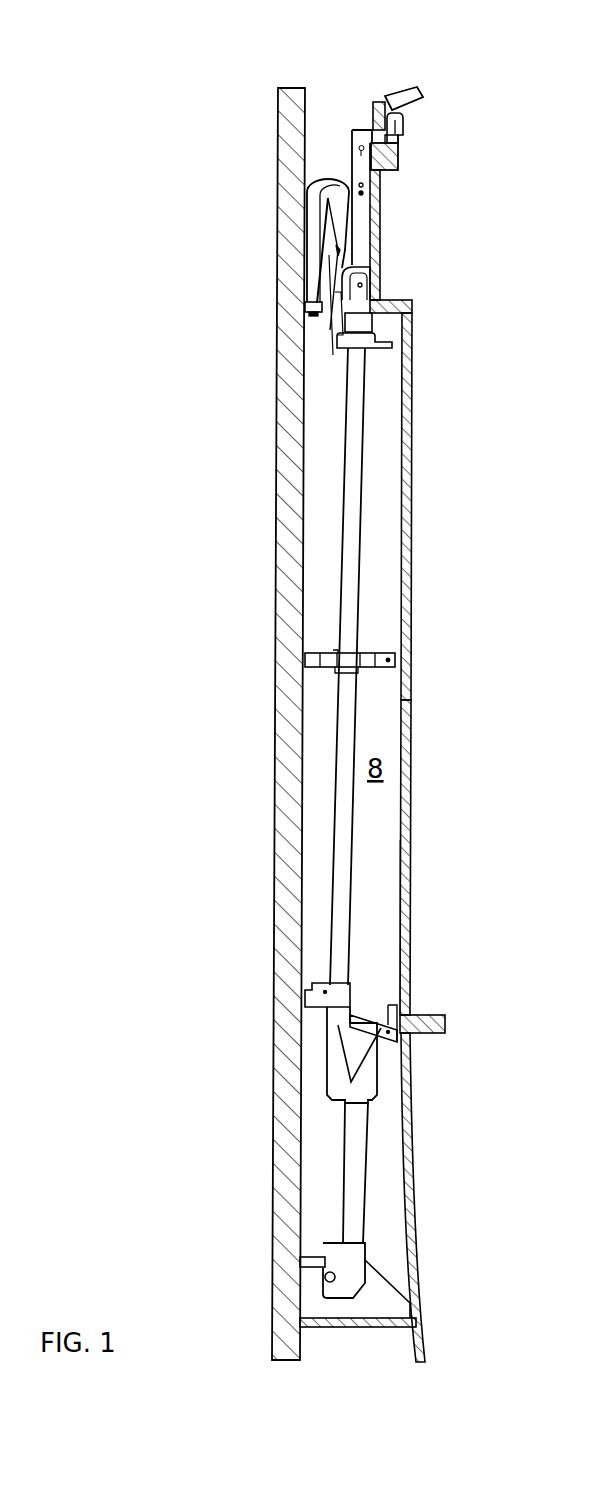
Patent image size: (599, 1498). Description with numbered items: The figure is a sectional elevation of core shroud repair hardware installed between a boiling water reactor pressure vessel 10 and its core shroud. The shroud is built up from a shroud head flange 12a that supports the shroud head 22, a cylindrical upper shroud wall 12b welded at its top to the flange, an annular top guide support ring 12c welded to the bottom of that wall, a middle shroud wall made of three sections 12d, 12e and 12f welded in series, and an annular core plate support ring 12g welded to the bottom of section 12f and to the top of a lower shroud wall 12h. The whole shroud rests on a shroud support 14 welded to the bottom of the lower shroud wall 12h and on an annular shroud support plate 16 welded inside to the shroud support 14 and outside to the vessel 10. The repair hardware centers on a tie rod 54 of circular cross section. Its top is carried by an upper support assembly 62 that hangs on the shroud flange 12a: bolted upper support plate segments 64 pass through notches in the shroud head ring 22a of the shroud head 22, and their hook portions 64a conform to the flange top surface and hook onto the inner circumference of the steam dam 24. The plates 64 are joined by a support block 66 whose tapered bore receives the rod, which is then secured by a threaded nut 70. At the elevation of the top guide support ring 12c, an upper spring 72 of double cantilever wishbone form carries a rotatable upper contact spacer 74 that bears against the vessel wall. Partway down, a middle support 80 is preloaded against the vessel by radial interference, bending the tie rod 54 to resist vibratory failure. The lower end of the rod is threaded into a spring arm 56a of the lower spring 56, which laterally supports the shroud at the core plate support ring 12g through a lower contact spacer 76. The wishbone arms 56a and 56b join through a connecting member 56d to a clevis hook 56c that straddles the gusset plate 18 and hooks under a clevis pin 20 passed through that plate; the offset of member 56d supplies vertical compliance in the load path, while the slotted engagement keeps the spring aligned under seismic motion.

The reactor pressure vessel 10 is at (275, 565).
The shroud head flange 12a is at (390, 152).
The upper shroud wall 12b is at (380, 245).
The top guide support ring 12c is at (412, 303).
The middle shroud wall section 12d is at (412, 462).
The middle shroud wall section 12e is at (410, 735).
The middle shroud wall section 12f is at (410, 842).
The core plate support ring 12g is at (425, 1033).
The lower shroud wall 12h is at (420, 1197).
The shroud support 14 is at (425, 1298).
The shroud support plate 16 is at (335, 1327).
The gusset plate 18 is at (310, 1265).
The clevis pin 20 is at (322, 1275).
The shroud head 22 is at (387, 78).
The shroud head ring 22a is at (372, 120).
The steam dam 24 is at (398, 138).
The tie rod 54 is at (335, 828).
The lower spring 56 is at (346, 1151).
The spring arm 56a is at (327, 1065).
The spring arm 56b is at (378, 1057).
The clevis hook 56c is at (357, 1252).
The connecting member 56d is at (357, 1147).
The upper support assembly 62 is at (352, 157).
The upper support plate 64 is at (358, 222).
The hook portion 64a is at (403, 124).
The support block 66 is at (372, 345).
The threaded nut 70 is at (372, 322).
The upper spring 72 is at (318, 190).
The upper contact spacer 74 is at (307, 305).
The lower contact spacer 76 is at (318, 990).
The middle support 80 is at (377, 652).